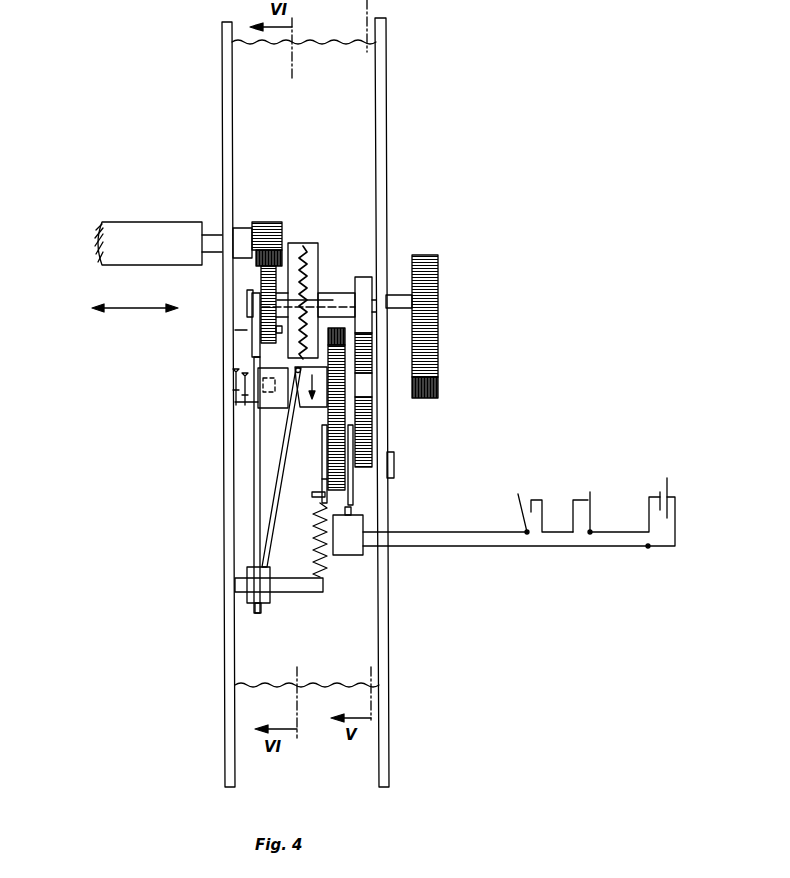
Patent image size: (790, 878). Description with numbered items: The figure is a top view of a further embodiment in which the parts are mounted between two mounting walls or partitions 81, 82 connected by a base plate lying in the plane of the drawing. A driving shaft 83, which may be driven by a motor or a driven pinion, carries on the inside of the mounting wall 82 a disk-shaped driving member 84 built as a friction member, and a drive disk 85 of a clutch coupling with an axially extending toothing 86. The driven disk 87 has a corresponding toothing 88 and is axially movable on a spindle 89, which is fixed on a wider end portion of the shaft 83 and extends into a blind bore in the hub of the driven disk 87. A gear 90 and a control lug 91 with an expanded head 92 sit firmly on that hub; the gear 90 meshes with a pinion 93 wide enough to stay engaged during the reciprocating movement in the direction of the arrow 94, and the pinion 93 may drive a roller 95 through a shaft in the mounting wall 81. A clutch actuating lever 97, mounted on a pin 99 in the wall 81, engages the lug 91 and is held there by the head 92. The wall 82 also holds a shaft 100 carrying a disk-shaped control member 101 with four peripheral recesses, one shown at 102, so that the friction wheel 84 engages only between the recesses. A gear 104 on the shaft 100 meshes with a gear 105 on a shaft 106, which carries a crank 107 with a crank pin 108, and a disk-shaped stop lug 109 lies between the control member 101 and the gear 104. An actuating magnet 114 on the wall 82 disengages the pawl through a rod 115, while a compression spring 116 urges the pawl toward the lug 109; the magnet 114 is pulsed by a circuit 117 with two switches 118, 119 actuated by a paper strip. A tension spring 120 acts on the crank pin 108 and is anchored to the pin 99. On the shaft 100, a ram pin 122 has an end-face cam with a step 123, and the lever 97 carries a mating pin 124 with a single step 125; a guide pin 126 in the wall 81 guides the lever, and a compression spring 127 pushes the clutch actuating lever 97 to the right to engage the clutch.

The mounting wall 81 is at (226, 42).
The mounting wall 82 is at (383, 64).
The driving shaft 83 is at (398, 302).
The disk-shaped driving member 84 is at (362, 277).
The drive disk 85 is at (309, 252).
The axially extending toothing 86 is at (301, 246).
The driven disk 87 is at (335, 312).
The toothing 88 is at (276, 330).
The spindle 89 is at (327, 290).
The gear 90 is at (258, 279).
The control lug 91 is at (249, 295).
The expanded head 92 is at (254, 322).
The pinion 93 is at (262, 222).
The arrow 94 is at (122, 312).
The roller 95 is at (133, 229).
The clutch actuating lever 97 is at (254, 455).
The pin 99 is at (288, 593).
The shaft 100 is at (345, 396).
The disk-shaped control member 101 is at (367, 392).
The peripheral recess 102 is at (433, 396).
The gear 104 is at (373, 312).
The gear 105 is at (360, 447).
The shaft 106 is at (394, 464).
The crank 107 is at (320, 480).
The crank pin 108 is at (313, 498).
The disk-shaped stop lug 109 is at (420, 347).
The actuating magnet 114 is at (350, 556).
The rod 115 is at (353, 506).
The compression spring 116 is at (352, 515).
The circuit 117 is at (600, 549).
The switch 118 is at (526, 496).
The switch 119 is at (578, 497).
The tension spring 120 is at (313, 553).
The ram pin 122 is at (318, 406).
The step 123 is at (299, 367).
The pin 124 is at (262, 404).
The step 125 is at (274, 443).
The guide pin 126 is at (246, 389).
The compression spring 127 is at (240, 380).